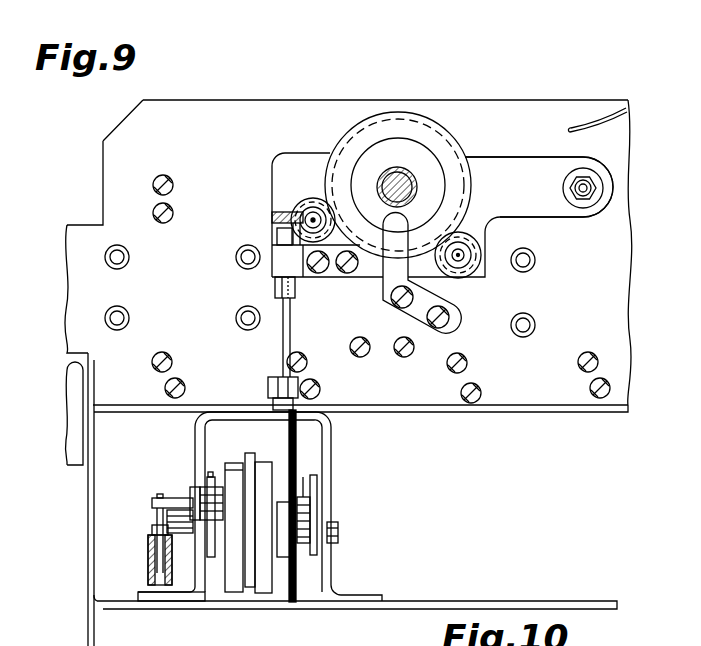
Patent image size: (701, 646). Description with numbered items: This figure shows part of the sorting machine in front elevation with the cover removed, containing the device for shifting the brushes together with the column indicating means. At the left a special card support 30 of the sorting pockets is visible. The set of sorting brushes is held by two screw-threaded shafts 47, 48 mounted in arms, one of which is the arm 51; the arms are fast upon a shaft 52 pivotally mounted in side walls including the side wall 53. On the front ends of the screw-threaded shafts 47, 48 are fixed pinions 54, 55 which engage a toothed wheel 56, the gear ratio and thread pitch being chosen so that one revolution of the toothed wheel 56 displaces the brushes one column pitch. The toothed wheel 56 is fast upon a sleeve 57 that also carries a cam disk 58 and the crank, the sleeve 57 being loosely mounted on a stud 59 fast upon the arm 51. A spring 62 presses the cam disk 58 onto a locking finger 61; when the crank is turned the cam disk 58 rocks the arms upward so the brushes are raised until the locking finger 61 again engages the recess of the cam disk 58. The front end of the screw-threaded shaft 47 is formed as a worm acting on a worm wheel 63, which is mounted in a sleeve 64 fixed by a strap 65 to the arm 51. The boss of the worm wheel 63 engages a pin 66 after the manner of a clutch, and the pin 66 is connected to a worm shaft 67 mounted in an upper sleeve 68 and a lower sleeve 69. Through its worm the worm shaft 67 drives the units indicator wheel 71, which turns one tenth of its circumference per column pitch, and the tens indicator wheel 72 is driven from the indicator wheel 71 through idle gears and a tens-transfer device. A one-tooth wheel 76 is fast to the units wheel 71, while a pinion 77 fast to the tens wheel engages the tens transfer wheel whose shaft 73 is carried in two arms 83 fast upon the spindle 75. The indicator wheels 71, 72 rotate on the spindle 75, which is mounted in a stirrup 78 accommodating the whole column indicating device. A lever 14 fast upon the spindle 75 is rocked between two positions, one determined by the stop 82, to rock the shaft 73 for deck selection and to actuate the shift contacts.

The lever 14 is at (158, 522).
The card support 30 is at (75, 427).
The screw-threaded shaft 47 is at (311, 213).
The screw-threaded shaft 48 is at (468, 258).
The arm 51 is at (556, 167).
The shaft 52 is at (590, 188).
The side wall 53 is at (583, 267).
The pinion 54 is at (318, 210).
The pinion 55 is at (460, 262).
The toothed wheel 56 is at (398, 127).
The sleeve 57 is at (417, 178).
The cam disk 58 is at (362, 254).
The stud 59 is at (403, 182).
The locking finger 61 is at (418, 307).
The spring 62 is at (573, 128).
The worm wheel 63 is at (285, 213).
The sleeve 64 is at (282, 233).
The strap 65 is at (287, 265).
The pin 66 is at (282, 352).
The worm shaft 67 is at (300, 433).
The sleeve 68 is at (288, 387).
The sleeve 69 is at (302, 598).
The indicator wheel 71 is at (267, 583).
The indicator wheel 72 is at (225, 592).
The shaft 73 is at (303, 477).
The spindle 75 is at (157, 527).
The wheel 76 is at (252, 462).
The pinion 77 is at (248, 577).
The stirrup 78 is at (323, 494).
The stop 82 is at (175, 500).
The arm 83 is at (212, 478).